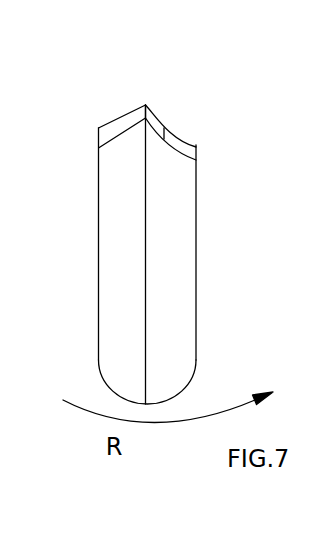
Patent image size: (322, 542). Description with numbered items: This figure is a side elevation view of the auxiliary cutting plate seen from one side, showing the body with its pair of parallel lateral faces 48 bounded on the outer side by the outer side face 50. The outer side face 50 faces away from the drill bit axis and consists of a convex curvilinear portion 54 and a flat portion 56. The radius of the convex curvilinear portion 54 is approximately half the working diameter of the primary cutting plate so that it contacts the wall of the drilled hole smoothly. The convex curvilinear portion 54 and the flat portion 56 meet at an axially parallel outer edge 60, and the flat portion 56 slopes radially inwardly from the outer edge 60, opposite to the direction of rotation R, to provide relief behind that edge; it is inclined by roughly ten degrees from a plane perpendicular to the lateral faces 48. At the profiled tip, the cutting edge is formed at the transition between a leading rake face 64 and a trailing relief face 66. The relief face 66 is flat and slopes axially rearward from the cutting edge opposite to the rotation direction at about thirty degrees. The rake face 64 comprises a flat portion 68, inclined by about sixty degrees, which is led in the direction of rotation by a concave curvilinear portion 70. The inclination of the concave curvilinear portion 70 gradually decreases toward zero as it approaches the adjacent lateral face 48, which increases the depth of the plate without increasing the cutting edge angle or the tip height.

The lateral faces 48 is at (98, 243).
The outer side face 50 is at (158, 337).
The convex curvilinear portion 54 is at (153, 254).
The flat portion 56 is at (108, 231).
The outer edge 60 is at (146, 298).
The rake face 64 is at (155, 97).
The relief face 66 is at (123, 122).
The flat portion 68 is at (147, 104).
The concave curvilinear portion 70 is at (183, 149).